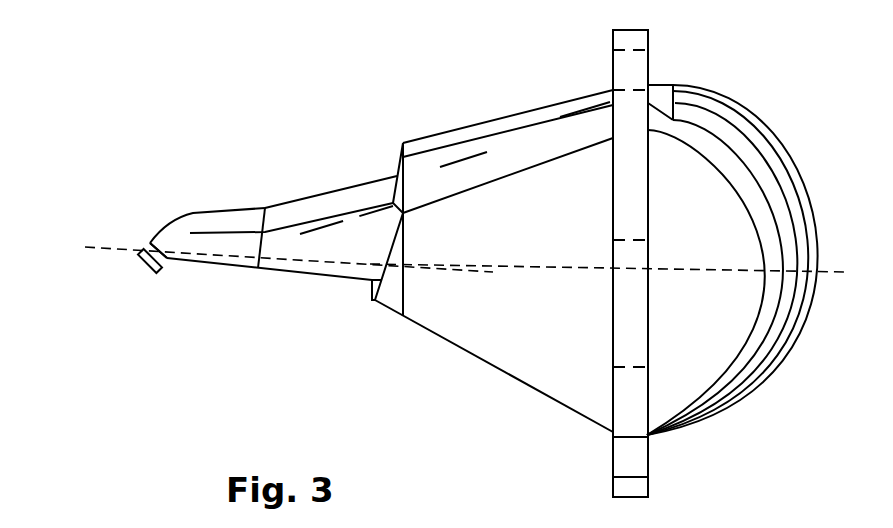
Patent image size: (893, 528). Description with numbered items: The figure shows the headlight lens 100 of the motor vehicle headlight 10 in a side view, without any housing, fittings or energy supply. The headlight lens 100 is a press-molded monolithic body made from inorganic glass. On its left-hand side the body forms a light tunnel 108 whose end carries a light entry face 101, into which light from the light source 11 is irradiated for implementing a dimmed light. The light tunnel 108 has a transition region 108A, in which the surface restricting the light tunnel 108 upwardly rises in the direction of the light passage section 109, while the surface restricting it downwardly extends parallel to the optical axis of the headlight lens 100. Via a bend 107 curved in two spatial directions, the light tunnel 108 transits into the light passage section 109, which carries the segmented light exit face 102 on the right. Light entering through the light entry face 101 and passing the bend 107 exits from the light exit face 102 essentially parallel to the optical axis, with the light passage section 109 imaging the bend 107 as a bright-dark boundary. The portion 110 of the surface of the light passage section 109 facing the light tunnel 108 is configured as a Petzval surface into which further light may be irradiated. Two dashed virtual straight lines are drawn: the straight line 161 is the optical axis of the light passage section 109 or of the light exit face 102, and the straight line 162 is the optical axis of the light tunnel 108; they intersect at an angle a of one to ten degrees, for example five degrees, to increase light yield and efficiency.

The motor vehicle headlight 10 is at (266, 155).
The light source 11 is at (145, 271).
The headlight lens 100 is at (503, 398).
The light entry face 101 is at (148, 243).
The light exit face 102 is at (755, 128).
The bend 107 is at (372, 300).
The light tunnel 108 is at (217, 207).
The transition region 108A is at (328, 194).
The light passage section 109 is at (493, 120).
The portion of the surface of the light passage section facing the light tunnel 110 is at (395, 293).
The straight line 161 is at (833, 270).
The straight line 162 is at (107, 249).
The angle a is at (493, 272).